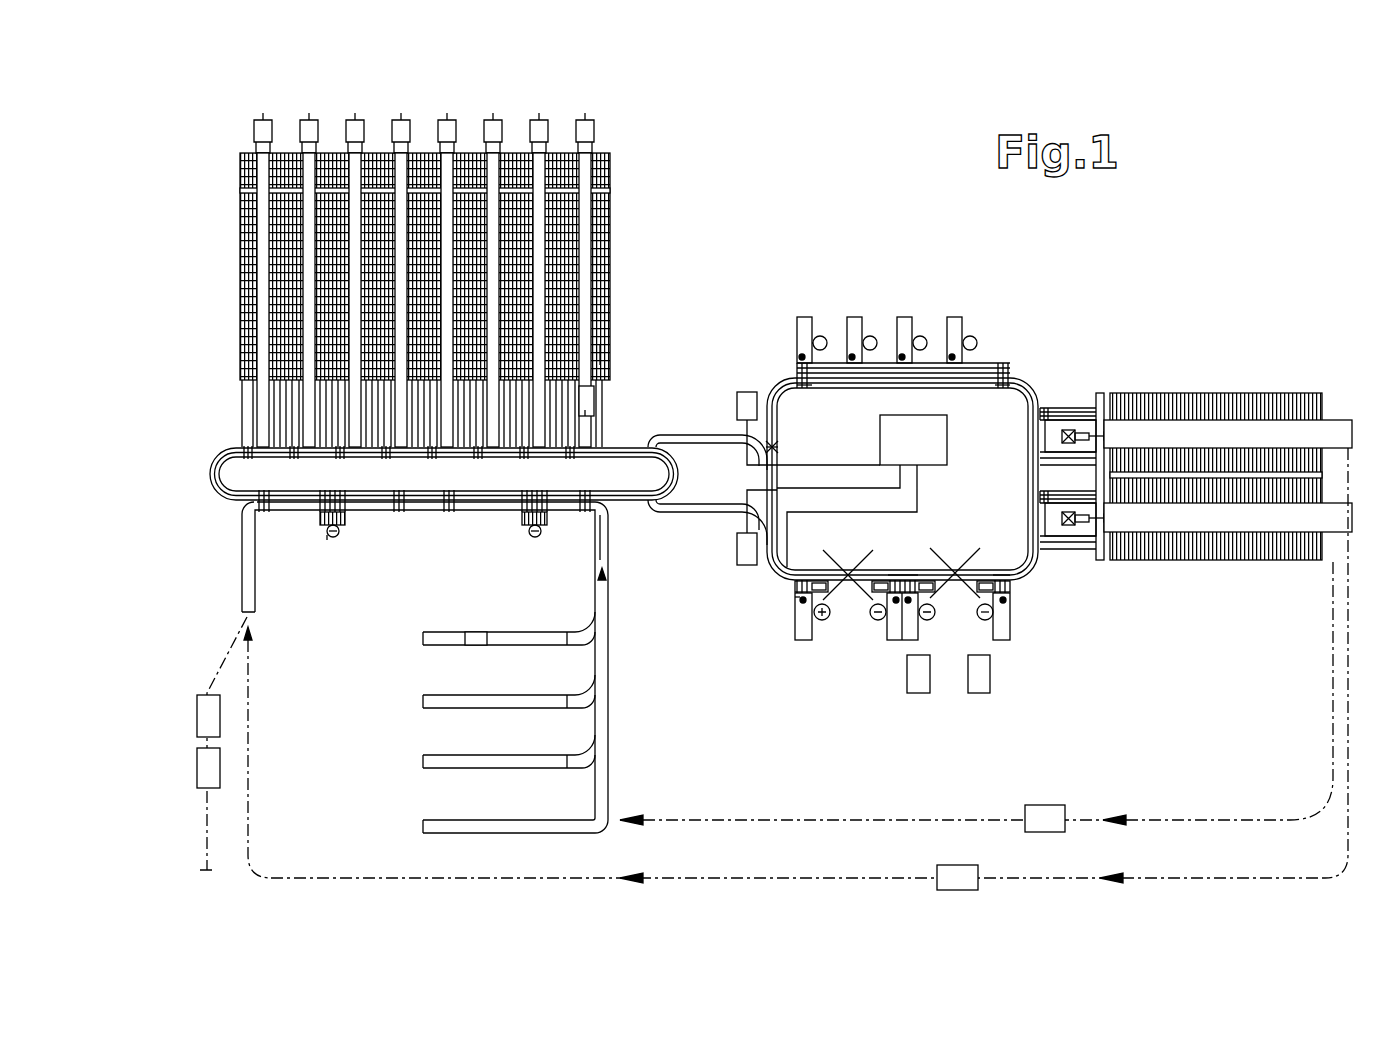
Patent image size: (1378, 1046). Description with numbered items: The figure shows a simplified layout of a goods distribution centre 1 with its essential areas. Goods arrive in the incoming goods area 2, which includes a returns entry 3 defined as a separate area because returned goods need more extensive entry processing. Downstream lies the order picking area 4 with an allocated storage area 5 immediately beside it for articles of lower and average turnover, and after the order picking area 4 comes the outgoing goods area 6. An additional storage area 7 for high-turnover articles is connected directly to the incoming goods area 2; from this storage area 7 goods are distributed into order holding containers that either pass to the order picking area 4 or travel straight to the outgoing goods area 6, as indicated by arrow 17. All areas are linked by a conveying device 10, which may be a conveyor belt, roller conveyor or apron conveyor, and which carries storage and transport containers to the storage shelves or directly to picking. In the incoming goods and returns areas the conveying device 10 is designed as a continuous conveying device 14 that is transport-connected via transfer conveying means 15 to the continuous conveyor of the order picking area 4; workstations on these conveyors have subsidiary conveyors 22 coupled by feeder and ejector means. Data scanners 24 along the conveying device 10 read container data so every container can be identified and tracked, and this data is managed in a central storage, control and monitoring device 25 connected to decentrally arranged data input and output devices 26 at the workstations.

The goods distribution centre 1 is at (678, 742).
The incoming goods area 2 is at (952, 702).
The returns entry 3 is at (884, 316).
The order picking area 4 is at (289, 648).
The storage area 5 is at (702, 172).
The outgoing goods area 6 is at (404, 782).
The additional storage area 7 is at (1218, 580).
The conveying device 10 is at (1046, 590).
The continuous conveying device 14 is at (720, 578).
The transfer conveying means 15 is at (694, 424).
The arrow 17 is at (722, 818).
The subsidiary conveyors 22 is at (370, 508).
The data scanners 24 is at (735, 548).
The central storage, control and monitoring device 25 is at (905, 433).
The data input and output devices 26 is at (795, 597).